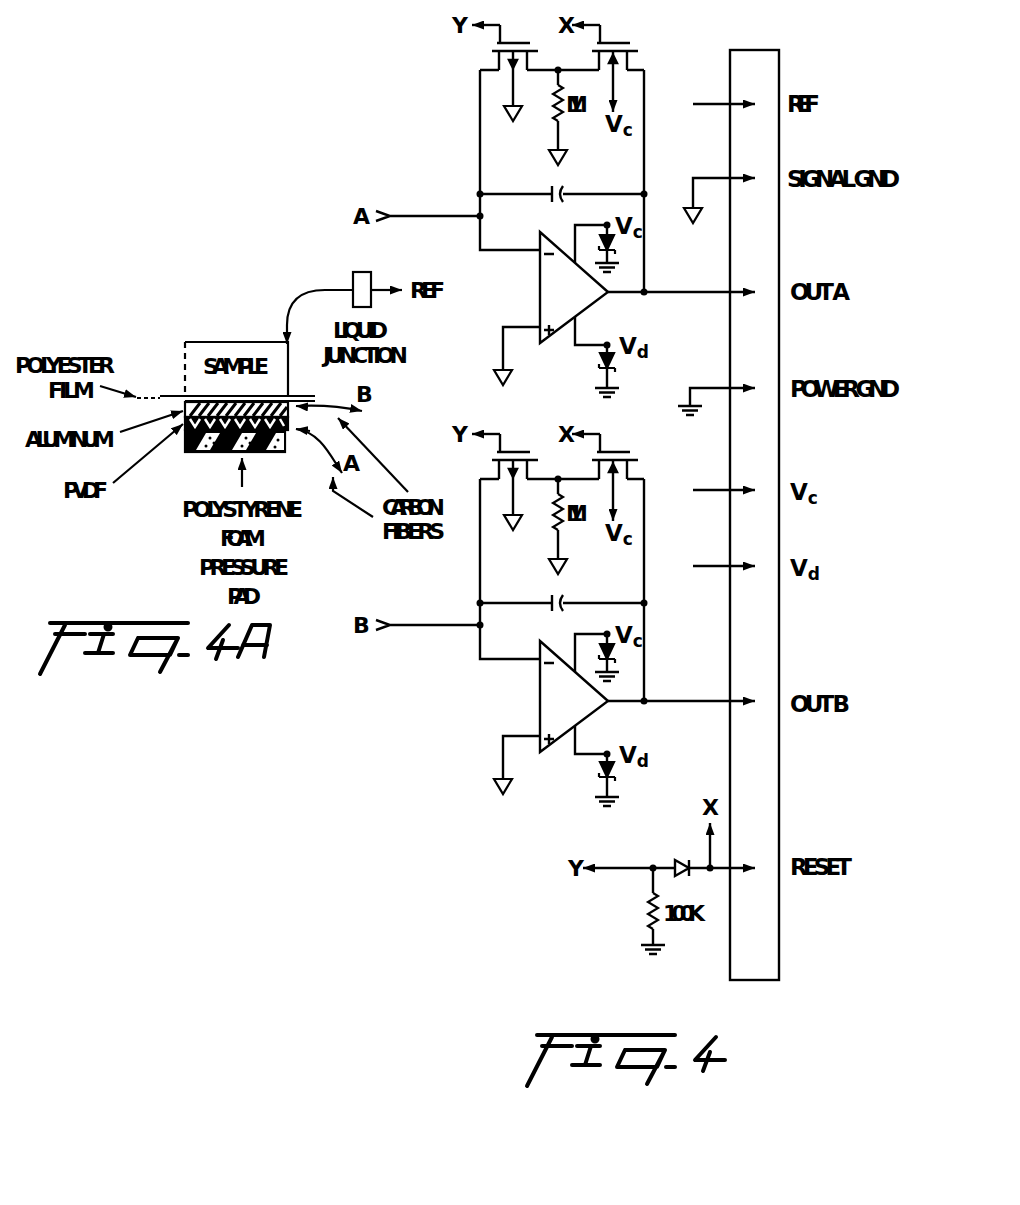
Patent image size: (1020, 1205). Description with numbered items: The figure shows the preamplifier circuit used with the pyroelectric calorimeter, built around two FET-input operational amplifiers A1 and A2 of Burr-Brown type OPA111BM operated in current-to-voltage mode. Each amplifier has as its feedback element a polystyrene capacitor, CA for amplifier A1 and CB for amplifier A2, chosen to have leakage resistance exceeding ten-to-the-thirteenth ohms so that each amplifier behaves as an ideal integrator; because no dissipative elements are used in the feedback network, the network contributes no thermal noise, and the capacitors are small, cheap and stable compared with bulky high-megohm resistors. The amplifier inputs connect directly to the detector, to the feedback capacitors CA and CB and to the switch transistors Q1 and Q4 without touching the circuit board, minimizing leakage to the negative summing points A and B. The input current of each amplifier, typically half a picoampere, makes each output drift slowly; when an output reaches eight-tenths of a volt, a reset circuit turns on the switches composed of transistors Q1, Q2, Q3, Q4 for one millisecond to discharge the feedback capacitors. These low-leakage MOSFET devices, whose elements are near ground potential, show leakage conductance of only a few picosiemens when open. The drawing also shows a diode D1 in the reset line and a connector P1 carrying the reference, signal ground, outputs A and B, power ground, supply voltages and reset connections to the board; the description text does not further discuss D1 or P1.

The switch transistor Q1 is at (505, 69).
The switch transistor Q2 is at (605, 65).
The switch transistor Q3 is at (605, 474).
The switch transistor Q4 is at (505, 478).
The operational amplifier A1 is at (574, 287).
The operational amplifier A2 is at (574, 696).
The feedback capacitor CA is at (562, 183).
The feedback capacitor CB is at (562, 592).
The reset diode D1 is at (680, 853).
The connector P1 is at (754, 500).